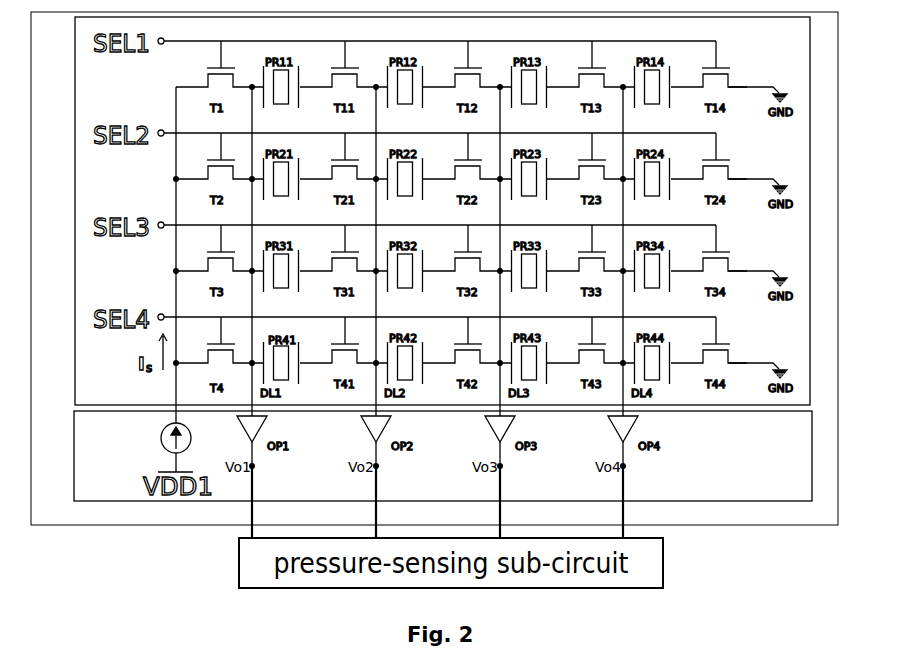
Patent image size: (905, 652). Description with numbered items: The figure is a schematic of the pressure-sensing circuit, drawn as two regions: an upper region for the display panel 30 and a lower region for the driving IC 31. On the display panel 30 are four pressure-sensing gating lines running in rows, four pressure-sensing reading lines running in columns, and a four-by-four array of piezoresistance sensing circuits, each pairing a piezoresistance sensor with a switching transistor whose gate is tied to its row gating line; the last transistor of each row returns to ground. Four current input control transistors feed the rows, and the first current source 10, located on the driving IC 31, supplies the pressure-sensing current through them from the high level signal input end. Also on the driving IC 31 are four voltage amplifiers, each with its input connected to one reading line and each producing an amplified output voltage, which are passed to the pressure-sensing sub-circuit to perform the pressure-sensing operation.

The first current source 10 is at (159, 440).
The display panel 30 is at (74, 137).
The driving IC 31 is at (72, 458).